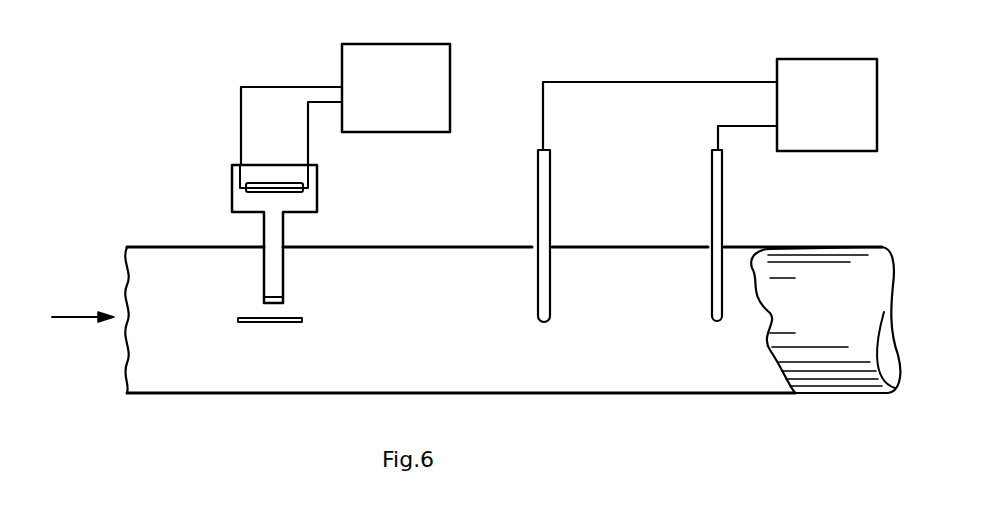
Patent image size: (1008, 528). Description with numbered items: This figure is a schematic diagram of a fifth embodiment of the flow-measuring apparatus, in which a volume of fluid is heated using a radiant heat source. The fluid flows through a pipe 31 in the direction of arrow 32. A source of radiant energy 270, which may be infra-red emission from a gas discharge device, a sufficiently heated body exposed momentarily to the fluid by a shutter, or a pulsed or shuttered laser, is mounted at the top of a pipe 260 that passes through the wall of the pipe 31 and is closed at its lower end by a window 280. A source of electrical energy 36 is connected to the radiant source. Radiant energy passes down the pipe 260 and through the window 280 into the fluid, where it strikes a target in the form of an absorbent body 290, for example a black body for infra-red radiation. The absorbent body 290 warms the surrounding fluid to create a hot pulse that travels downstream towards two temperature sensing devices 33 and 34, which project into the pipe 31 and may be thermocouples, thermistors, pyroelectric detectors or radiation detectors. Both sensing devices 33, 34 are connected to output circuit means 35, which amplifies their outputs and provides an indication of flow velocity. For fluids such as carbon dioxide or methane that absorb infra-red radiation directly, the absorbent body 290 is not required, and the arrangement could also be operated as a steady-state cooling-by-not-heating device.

The pipe 31 is at (420, 247).
The arrow 32 is at (67, 316).
The temperature sensing device 33 is at (549, 316).
The temperature sensing device 34 is at (713, 318).
The output circuit means 35 is at (833, 151).
The source of electrical energy 36 is at (450, 76).
The pipe 260 is at (263, 235).
The source of radiant energy 270 is at (262, 182).
The window 280 is at (264, 299).
The absorbent body 290 is at (258, 324).